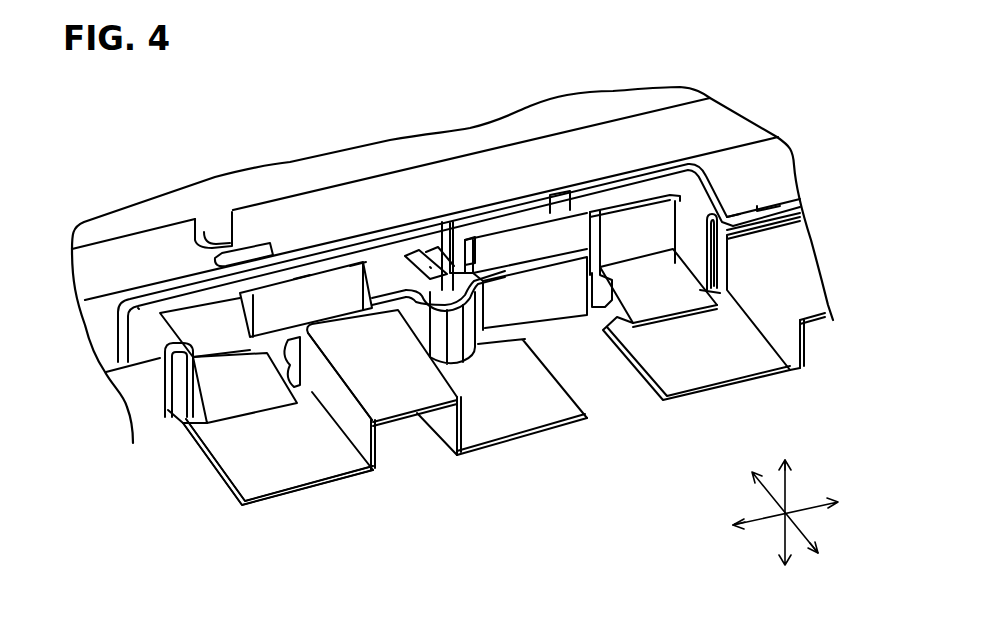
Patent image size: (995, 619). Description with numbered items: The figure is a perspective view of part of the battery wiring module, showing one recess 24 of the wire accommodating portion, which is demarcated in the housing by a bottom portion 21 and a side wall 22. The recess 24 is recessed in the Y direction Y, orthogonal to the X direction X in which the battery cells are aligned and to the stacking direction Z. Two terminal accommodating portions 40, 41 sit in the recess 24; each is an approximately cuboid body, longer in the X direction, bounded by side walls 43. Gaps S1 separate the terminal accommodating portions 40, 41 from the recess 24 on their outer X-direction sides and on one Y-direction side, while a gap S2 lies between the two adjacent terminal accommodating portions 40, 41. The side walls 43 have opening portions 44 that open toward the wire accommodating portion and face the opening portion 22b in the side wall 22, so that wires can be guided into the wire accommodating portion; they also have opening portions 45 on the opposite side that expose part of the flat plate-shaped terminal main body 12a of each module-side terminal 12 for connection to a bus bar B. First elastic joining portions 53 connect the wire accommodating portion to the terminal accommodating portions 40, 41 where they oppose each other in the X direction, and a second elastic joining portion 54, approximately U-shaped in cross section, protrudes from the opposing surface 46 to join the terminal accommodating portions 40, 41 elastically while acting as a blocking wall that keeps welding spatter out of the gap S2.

The bottom portion 21 is at (732, 160).
The side wall 22 is at (175, 270).
The opening portion 22b is at (357, 262).
The recess 24 is at (302, 275).
The terminal accommodating portion 40 is at (266, 278).
The terminal accommodating portion 41 is at (617, 205).
The side wall 43 is at (210, 290).
The opening portion 44 is at (377, 290).
The opening portion 45 is at (178, 380).
The opposing surface 46 is at (422, 325).
The first elastic joining portion 53 is at (160, 386).
The second elastic joining portion 54 is at (465, 350).
The terminal main body 12a is at (261, 408).
The module-side terminal 12 is at (278, 462).
The bus bar B is at (375, 478).
The gap S1 is at (134, 313).
The gap S2 is at (426, 271).
The X direction X is at (762, 522).
The Y direction Y is at (805, 530).
The Z direction Z is at (787, 490).